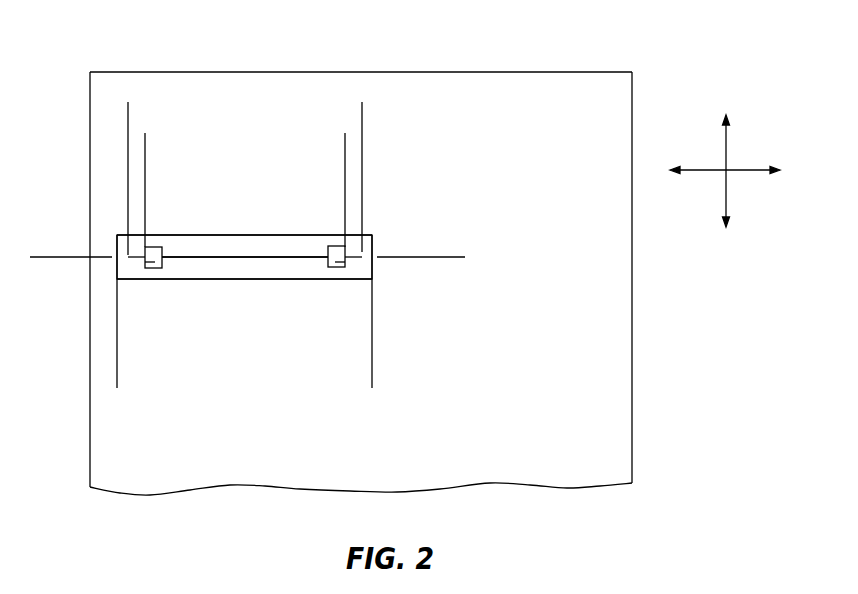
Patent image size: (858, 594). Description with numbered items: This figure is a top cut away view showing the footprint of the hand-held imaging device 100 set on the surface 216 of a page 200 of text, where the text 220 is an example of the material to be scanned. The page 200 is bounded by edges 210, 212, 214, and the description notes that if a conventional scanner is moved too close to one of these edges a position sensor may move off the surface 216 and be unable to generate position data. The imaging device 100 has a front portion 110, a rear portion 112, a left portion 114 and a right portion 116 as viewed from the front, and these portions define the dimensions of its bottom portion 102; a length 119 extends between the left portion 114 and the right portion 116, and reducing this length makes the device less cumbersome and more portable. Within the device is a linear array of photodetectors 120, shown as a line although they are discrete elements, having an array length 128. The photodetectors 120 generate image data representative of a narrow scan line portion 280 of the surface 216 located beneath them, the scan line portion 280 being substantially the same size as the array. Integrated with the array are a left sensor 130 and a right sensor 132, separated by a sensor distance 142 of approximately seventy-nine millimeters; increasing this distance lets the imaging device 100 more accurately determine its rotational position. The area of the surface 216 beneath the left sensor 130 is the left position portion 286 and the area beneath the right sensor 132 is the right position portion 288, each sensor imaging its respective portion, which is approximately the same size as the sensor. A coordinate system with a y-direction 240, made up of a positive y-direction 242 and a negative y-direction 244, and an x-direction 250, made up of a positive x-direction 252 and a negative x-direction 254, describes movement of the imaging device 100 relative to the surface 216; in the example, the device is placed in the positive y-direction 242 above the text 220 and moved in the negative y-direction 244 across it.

The imaging device 100 is at (246, 244).
The bottom portion 102 is at (193, 247).
The front portion 110 is at (243, 235).
The rear portion 112 is at (243, 280).
The left portion 114 is at (117, 240).
The right portion 116 is at (372, 240).
The length 119 is at (126, 377).
The linear array of photodetectors 120 is at (295, 256).
The array length 128 is at (353, 112).
The left sensor 130 is at (154, 281).
The right sensor 132 is at (336, 281).
The sensor distance 142 is at (336, 145).
The page 200 is at (362, 257).
The edge 210 is at (225, 72).
The edge 212 is at (90, 383).
The edge 214 is at (633, 379).
The surface 216 is at (528, 363).
The text 220 is at (287, 435).
The y-direction 240 is at (735, 171).
The positive y-direction 242 is at (727, 135).
The negative y-direction 244 is at (730, 205).
The x-direction 250 is at (735, 164).
The positive x-direction 252 is at (745, 172).
The negative x-direction 254 is at (707, 172).
The scan line portion 280 is at (245, 225).
The left position portion 286 is at (150, 262).
The right position portion 288 is at (340, 262).